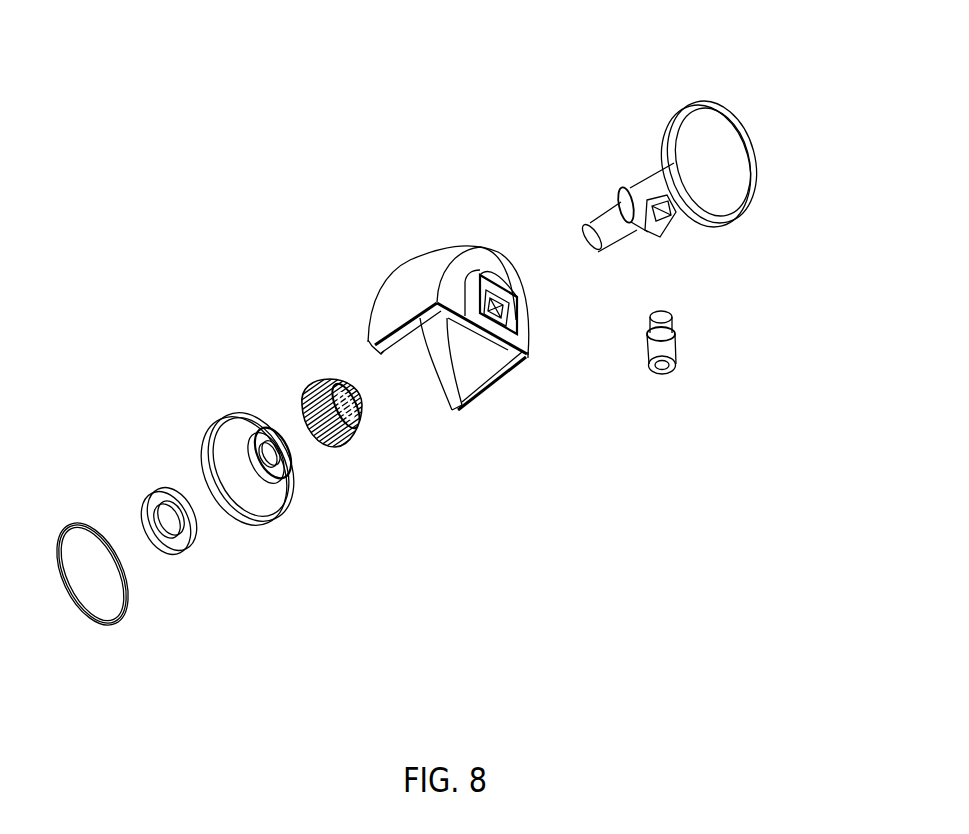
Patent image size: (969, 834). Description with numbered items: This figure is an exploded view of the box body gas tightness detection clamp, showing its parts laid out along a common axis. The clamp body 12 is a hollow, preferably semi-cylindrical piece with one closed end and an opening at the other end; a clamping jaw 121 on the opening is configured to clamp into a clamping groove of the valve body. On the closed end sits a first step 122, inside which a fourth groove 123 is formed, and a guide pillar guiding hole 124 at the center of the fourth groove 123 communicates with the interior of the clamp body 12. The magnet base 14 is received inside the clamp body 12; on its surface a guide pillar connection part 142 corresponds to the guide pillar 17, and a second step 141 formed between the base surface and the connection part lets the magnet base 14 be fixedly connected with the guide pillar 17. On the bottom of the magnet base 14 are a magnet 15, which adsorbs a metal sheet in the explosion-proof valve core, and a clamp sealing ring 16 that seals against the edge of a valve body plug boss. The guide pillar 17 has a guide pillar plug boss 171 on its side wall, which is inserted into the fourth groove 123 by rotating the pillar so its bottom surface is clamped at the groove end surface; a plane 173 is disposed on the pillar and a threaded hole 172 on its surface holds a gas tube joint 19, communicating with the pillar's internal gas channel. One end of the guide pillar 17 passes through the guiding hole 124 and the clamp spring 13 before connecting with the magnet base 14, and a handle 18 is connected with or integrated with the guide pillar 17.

The clamp body 12 is at (454, 320).
The clamping jaw 121 is at (457, 408).
The first step 122 is at (473, 301).
The fourth groove 123 is at (478, 275).
The guide pillar guiding hole 124 is at (485, 297).
The clamp spring 13 is at (355, 462).
The magnet base 14 is at (260, 450).
The second step 141 is at (247, 435).
The guide pillar connection part 142 is at (272, 428).
The magnet 15 is at (185, 565).
The clamp sealing ring 16 is at (124, 625).
The guide pillar 17 is at (689, 264).
The guide pillar plug boss 171 is at (620, 180).
The threaded hole 172 is at (673, 217).
The plane 173 is at (648, 220).
The handle 18 is at (667, 110).
The gas tube joint 19 is at (680, 362).